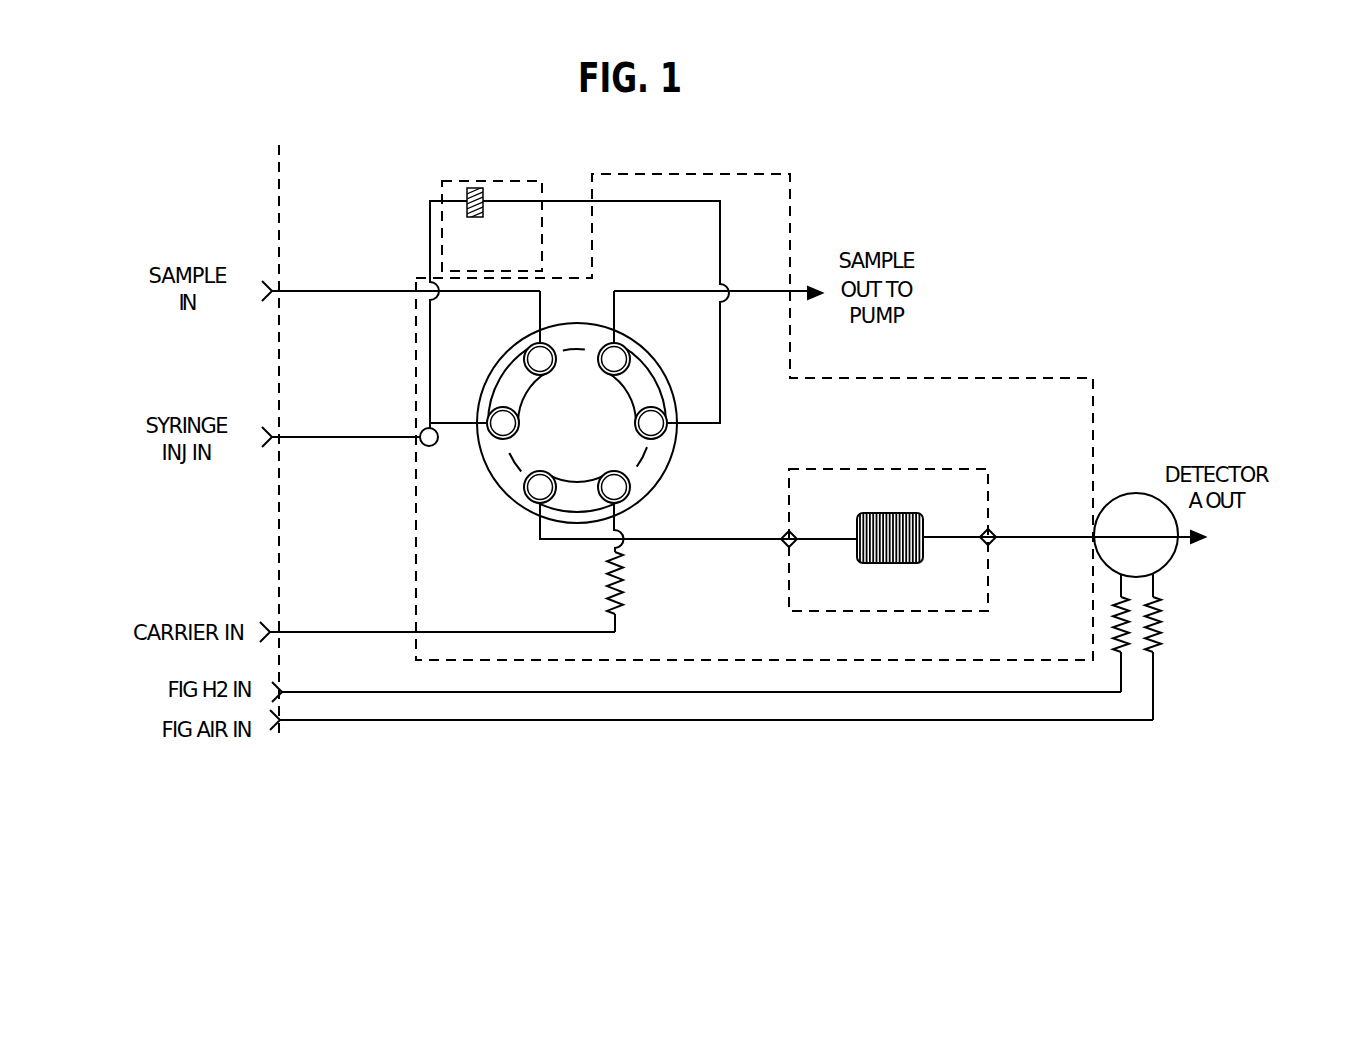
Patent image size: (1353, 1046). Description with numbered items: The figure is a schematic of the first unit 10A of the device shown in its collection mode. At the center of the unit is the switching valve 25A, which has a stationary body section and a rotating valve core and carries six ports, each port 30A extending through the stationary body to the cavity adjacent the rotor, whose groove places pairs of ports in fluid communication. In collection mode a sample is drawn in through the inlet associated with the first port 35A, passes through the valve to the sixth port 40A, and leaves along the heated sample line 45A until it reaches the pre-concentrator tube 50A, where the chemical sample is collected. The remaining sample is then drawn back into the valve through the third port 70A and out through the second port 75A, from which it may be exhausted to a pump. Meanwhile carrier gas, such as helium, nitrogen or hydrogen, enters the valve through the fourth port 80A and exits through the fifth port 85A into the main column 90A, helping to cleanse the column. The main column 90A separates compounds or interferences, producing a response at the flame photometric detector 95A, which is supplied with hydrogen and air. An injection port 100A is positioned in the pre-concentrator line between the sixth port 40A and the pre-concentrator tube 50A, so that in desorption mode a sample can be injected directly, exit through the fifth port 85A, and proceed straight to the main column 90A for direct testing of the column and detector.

The first unit 10A is at (1019, 172).
The switching valve 25A is at (482, 484).
The first port 30A is at (496, 437).
The first port 35A is at (522, 346).
The sixth port 40A is at (489, 446).
The heated sample line 45A is at (430, 224).
The pre-concentrator tube 50A is at (467, 190).
The third port 70A is at (652, 430).
The second port 75A is at (629, 355).
The fourth port 80A is at (620, 490).
The fifth port 85A is at (527, 498).
The main column 90A is at (903, 563).
The flame photometric detector 95A is at (1165, 557).
The injection port 100A is at (421, 432).